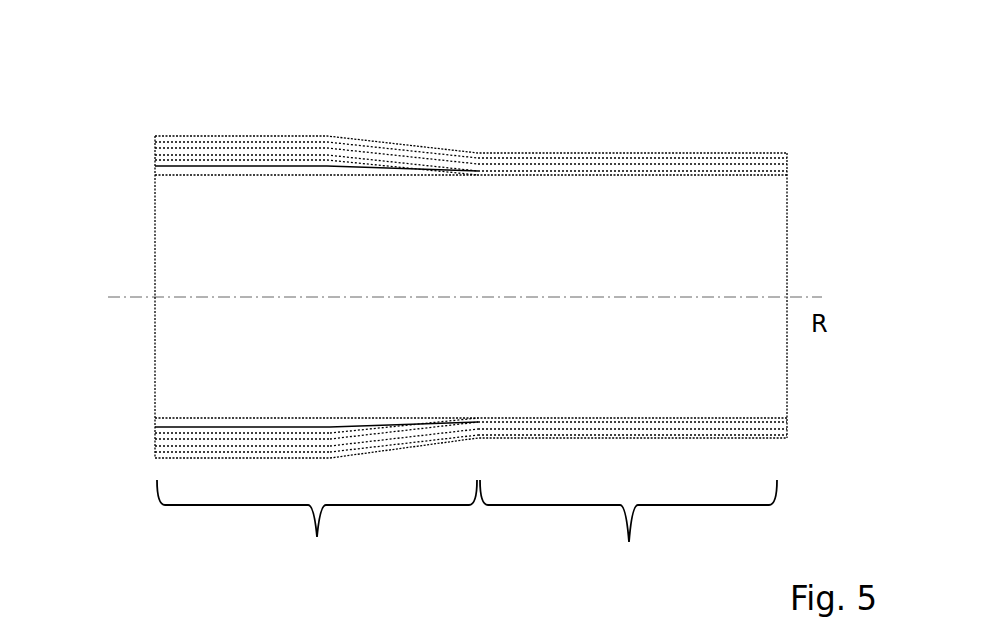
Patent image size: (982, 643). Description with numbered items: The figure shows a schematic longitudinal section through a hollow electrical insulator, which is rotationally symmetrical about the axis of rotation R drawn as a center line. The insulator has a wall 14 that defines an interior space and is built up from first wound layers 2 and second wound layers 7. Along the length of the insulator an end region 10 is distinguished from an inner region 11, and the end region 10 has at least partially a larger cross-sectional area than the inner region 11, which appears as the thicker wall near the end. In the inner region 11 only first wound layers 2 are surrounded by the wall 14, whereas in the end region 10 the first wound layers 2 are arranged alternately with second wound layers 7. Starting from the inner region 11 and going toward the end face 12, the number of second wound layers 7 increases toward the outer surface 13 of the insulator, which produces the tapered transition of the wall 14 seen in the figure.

The first wound layers 2 is at (170, 168).
The second wound layers 7 is at (212, 165).
The end region 10 is at (317, 529).
The inner region 11 is at (628, 530).
The end face 12 is at (155, 243).
The outer surface 13 is at (397, 145).
The wall 14 is at (765, 164).